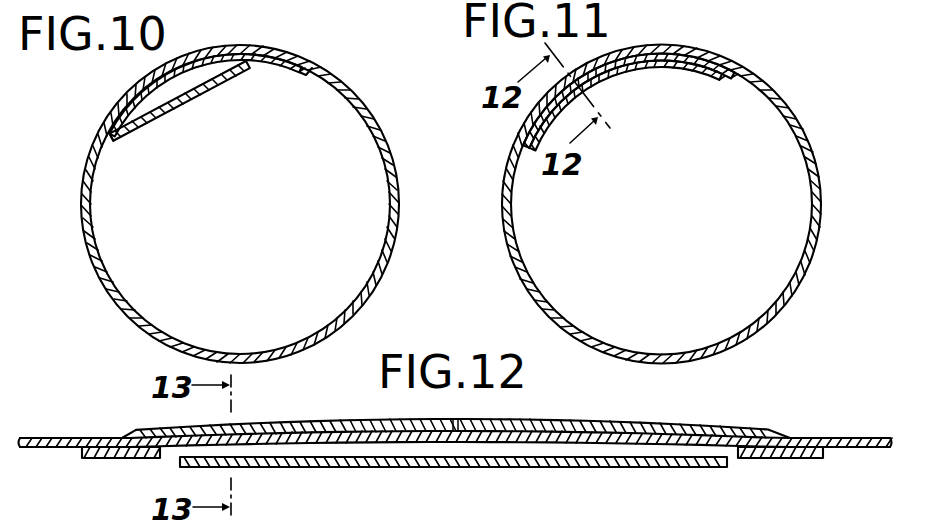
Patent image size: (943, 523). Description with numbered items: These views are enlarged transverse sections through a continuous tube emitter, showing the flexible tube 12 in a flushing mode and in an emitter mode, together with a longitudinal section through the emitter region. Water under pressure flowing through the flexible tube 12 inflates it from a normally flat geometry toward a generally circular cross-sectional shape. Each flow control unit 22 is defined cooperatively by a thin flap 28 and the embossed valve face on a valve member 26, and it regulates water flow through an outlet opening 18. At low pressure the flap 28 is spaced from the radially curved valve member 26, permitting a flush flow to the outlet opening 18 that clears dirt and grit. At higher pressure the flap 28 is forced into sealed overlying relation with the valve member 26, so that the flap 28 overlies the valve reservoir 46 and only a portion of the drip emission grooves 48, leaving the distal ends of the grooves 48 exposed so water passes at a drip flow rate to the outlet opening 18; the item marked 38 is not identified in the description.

In FIG. 10, the flexible tube 12 is at (401, 213).
In FIG. 11, the flexible tube 12 is at (813, 154).
In FIG. 12, the flexible tube 12 is at (847, 438).
In FIG. 12, the outlet opening 18 is at (459, 420).
In FIG. 10, the flow control unit 22 is at (190, 107).
In FIG. 11, the flow control unit 22 is at (639, 83).
In FIG. 10, the valve member 26 is at (196, 53).
In FIG. 11, the valve member 26 is at (613, 62).
In FIG. 12, the valve member 26 is at (582, 421).
In FIG. 10, the thin flap 28 is at (114, 136).
In FIG. 11, the thin flap 28 is at (606, 78).
In FIG. 12, the thin flap 28 is at (591, 467).
In FIG. 10, the joint 38 is at (312, 62).
In FIG. 12, the valve reservoir 46 is at (340, 434).
In FIG. 12, the drip emission groove 48 is at (157, 458).